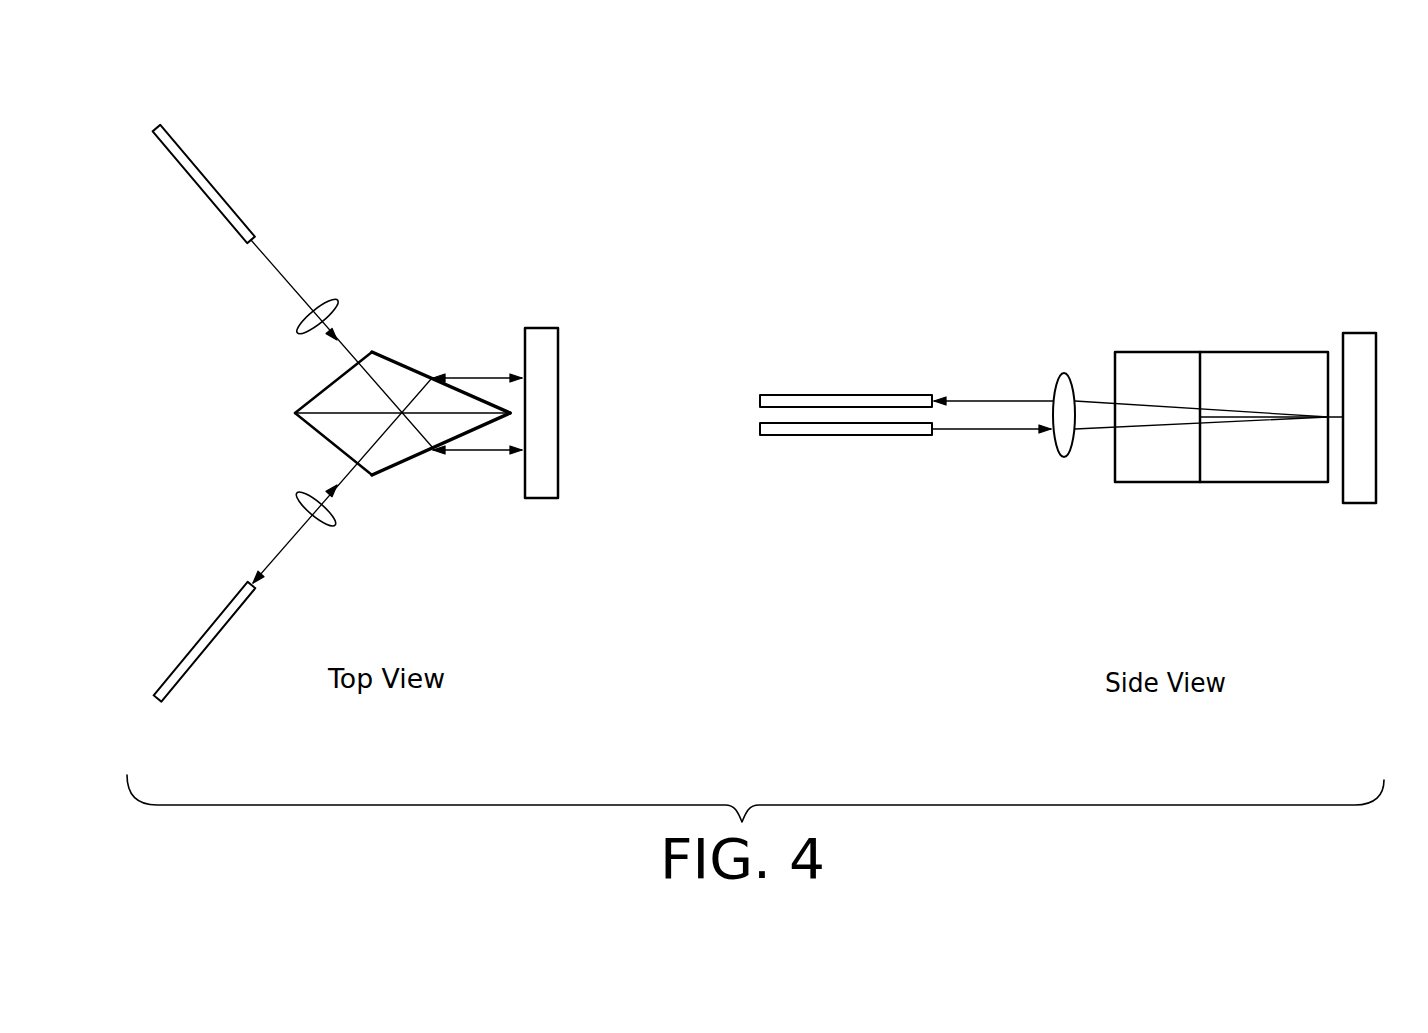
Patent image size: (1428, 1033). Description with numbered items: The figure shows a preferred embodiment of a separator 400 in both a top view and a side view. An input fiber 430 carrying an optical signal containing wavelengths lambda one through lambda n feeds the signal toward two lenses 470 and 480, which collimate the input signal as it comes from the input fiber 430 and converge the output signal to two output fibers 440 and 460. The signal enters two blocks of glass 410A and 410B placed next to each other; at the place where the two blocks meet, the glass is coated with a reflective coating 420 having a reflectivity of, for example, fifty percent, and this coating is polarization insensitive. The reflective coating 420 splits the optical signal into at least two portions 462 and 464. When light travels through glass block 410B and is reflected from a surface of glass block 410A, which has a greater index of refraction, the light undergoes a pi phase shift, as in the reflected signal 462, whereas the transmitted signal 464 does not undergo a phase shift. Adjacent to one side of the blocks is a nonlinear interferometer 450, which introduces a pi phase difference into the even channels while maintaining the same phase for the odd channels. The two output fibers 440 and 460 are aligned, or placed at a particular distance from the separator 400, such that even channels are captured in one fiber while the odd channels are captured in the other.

The separator 400 is at (425, 193).
The glass block 410A is at (387, 472).
The glass block 410B is at (383, 357).
The reflective coating 420 is at (317, 415).
The input fiber 430 is at (205, 196).
The output fiber 440 is at (830, 395).
The nonlinear interferometer 450 is at (540, 498).
The output fiber 460 is at (205, 632).
The signal portion 462 is at (414, 392).
The signal portion 464 is at (414, 435).
The lens 470 is at (337, 302).
The lens 480 is at (330, 520).